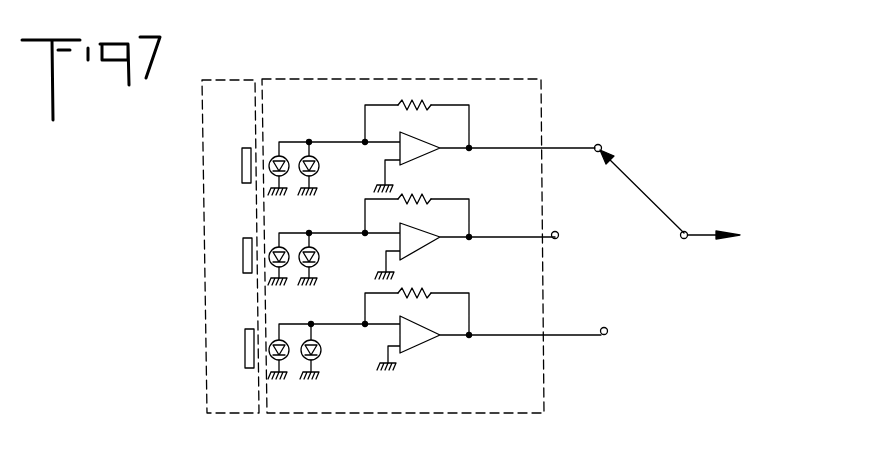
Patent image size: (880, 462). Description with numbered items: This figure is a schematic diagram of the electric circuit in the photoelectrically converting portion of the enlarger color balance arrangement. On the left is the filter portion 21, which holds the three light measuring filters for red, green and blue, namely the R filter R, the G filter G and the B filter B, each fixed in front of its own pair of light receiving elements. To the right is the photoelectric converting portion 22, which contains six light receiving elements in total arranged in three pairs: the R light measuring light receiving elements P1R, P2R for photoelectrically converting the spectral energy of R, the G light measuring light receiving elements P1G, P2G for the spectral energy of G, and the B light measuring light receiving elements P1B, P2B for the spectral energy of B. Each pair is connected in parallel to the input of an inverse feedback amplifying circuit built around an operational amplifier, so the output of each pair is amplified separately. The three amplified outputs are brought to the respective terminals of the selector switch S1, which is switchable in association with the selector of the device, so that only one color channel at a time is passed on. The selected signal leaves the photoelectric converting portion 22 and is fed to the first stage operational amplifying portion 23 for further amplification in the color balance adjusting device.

The filter portion 21 is at (228, 416).
The photoelectric converting portion 22 is at (368, 416).
The R light measuring filter R is at (241, 152).
The G light measuring filter G is at (242, 245).
The B light measuring filter B is at (244, 335).
The R light measuring light receiving element P1R is at (289, 170).
The R light measuring light receiving element P2R is at (319, 168).
The G light measuring light receiving element P1G is at (289, 261).
The G light measuring light receiving element P2G is at (319, 259).
The B light measuring light receiving element P1B is at (289, 354).
The B light measuring light receiving element P2B is at (321, 352).
The selector switch S1 is at (650, 185).
The first stage operational amplifying portion 23 is at (729, 237).